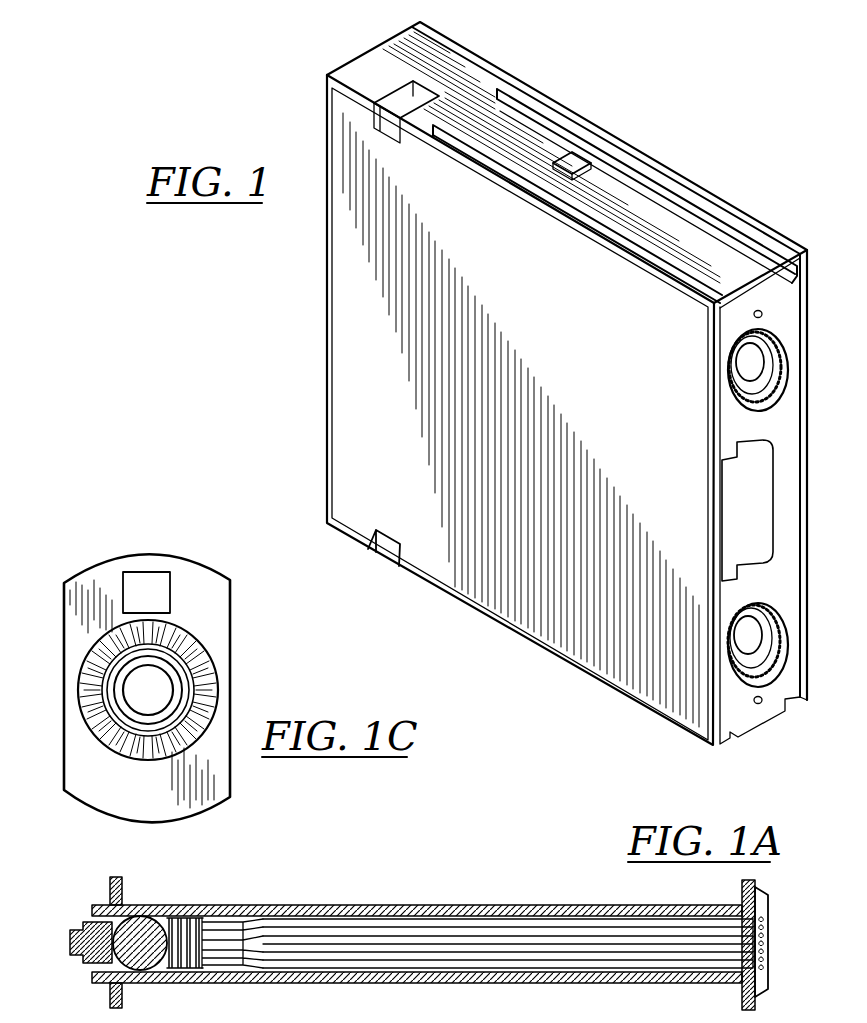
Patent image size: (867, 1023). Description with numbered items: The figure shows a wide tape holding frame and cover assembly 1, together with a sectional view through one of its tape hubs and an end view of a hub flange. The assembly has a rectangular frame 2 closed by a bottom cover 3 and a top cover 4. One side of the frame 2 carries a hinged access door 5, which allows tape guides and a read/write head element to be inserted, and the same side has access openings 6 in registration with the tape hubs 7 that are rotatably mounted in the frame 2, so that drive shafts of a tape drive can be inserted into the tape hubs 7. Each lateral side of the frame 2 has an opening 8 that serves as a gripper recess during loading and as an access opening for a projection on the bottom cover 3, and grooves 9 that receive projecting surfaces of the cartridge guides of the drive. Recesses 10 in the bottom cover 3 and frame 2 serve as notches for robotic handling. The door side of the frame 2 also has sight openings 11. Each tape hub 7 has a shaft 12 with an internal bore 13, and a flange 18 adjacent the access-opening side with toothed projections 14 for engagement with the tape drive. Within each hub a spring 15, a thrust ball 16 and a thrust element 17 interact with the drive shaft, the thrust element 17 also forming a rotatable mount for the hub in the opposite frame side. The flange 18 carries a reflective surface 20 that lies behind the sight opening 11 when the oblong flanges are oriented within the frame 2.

In FIG. 1, the wide tape holding frame and cover assembly 1 is at (304, 272).
In FIG. 1, the rectangular frame 2 is at (395, 52).
In FIG. 1, the bottom cover 3 is at (348, 428).
In FIG. 1, the top cover 4 is at (452, 35).
In FIG. 1, the hinged access door 5 is at (737, 492).
In FIG. 1, the access openings 6 is at (780, 385).
In FIG. 1, the tape hubs 7 is at (763, 358).
In FIG. 1A, the tape hubs 7 is at (493, 878).
In FIG. 1, the opening 8 is at (577, 158).
In FIG. 1, the grooves 9 is at (657, 183).
In FIG. 1, the recesses 10 is at (388, 130).
In FIG. 1, the sight openings 11 is at (757, 318).
In FIG. 1A, the shaft 12 is at (237, 905).
In FIG. 1A, the internal bore 13 is at (416, 940).
In FIG. 1C, the toothed projections 14 is at (208, 656).
In FIG. 1A, the toothed projections 14 is at (770, 943).
In FIG. 1A, the spring 15 is at (182, 917).
In FIG. 1A, the thrust ball 16 is at (138, 935).
In FIG. 1A, the thrust element 17 is at (70, 940).
In FIG. 1C, the flange 18 is at (190, 595).
In FIG. 1C, the reflective surface 20 is at (142, 587).